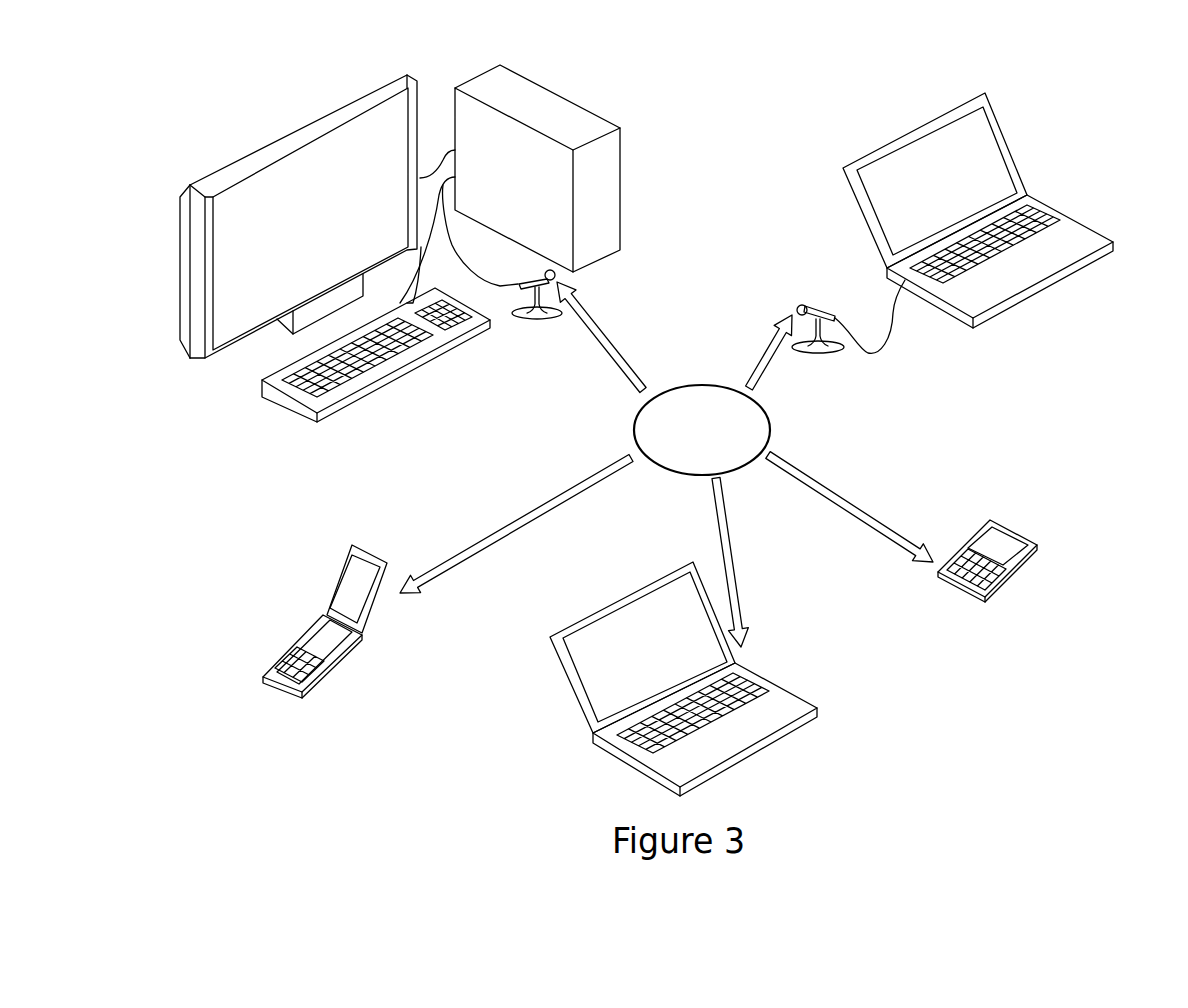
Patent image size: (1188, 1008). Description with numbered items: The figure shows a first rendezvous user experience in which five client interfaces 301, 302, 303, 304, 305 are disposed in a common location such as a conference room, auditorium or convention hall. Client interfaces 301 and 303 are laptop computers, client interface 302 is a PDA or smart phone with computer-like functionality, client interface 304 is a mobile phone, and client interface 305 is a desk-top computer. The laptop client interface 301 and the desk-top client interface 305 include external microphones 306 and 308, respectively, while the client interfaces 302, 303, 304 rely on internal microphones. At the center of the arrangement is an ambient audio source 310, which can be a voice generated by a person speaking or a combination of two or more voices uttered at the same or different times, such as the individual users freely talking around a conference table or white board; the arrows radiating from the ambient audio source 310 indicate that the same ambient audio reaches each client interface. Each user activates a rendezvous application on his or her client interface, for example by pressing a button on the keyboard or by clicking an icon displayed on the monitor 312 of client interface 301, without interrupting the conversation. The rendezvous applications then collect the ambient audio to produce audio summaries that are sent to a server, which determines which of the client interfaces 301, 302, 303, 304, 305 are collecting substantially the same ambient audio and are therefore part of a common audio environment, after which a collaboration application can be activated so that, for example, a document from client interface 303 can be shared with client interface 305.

The client interface 301 is at (1010, 210).
The client interface 302 is at (1070, 487).
The client interface 303 is at (820, 662).
The client interface 304 is at (280, 570).
The client interface 305 is at (238, 114).
The external microphone 306 is at (818, 308).
The external microphone 308 is at (535, 272).
The ambient audio source 310 is at (770, 429).
The monitor 312 is at (963, 193).